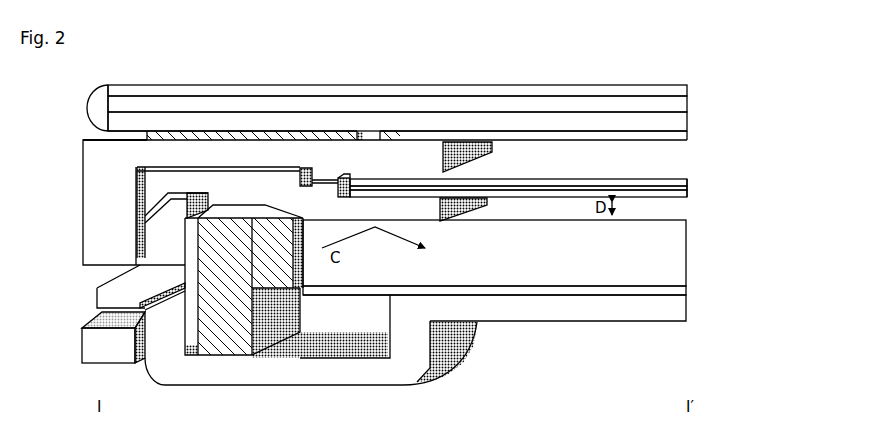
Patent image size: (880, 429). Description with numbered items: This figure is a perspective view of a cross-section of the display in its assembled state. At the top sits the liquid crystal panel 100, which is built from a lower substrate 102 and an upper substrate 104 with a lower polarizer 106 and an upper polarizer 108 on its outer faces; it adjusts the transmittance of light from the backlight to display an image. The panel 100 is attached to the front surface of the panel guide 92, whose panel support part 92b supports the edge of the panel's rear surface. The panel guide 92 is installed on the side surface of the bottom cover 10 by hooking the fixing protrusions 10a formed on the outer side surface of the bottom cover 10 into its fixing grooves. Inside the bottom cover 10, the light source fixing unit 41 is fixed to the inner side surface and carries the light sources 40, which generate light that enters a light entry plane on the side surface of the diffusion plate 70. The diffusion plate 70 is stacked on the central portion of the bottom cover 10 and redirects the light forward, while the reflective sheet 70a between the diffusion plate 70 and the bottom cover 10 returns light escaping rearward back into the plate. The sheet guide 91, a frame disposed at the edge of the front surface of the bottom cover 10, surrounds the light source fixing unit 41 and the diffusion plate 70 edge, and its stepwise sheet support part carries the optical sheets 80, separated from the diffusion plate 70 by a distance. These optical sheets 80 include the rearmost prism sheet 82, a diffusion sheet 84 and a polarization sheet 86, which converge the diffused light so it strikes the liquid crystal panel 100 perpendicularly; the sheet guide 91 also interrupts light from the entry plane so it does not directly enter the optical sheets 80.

The liquid crystal panel 100 is at (430, 115).
The upper polarizer 108 is at (688, 86).
The upper substrate 104 is at (682, 103).
The lower substrate 102 is at (682, 125).
The lower polarizer 106 is at (410, 142).
The optical sheets 80 is at (553, 186).
The polarization sheet 86 is at (688, 180).
The diffusion sheet 84 is at (688, 188).
The prism sheet 82 is at (688, 196).
The panel guide 92 is at (88, 160).
The panel support part 92b is at (97, 136).
The sheet guide 91 is at (147, 178).
The bottom cover 10 is at (152, 215).
The fixing protrusions 10a is at (96, 298).
The light source fixing unit 41 is at (210, 240).
The diffusion plate 70 is at (682, 253).
The reflective sheet 70a is at (682, 294).
The light sources 40 is at (277, 283).